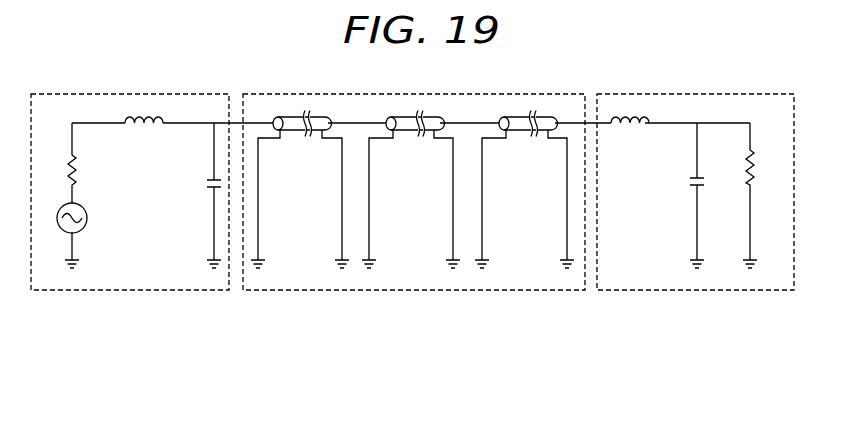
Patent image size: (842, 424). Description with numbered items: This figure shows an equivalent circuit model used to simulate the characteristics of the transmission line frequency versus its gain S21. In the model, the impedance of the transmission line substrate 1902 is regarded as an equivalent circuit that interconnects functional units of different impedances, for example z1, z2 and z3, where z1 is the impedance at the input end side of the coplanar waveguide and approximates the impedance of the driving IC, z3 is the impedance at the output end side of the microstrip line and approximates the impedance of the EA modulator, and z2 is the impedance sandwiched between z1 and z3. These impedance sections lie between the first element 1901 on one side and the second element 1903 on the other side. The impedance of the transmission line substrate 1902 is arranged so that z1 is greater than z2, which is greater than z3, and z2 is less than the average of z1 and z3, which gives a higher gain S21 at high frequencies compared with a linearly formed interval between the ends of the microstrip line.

The element 1 1901 is at (108, 292).
The transmission line substrate 1902 is at (372, 292).
The element 2 1903 is at (670, 292).